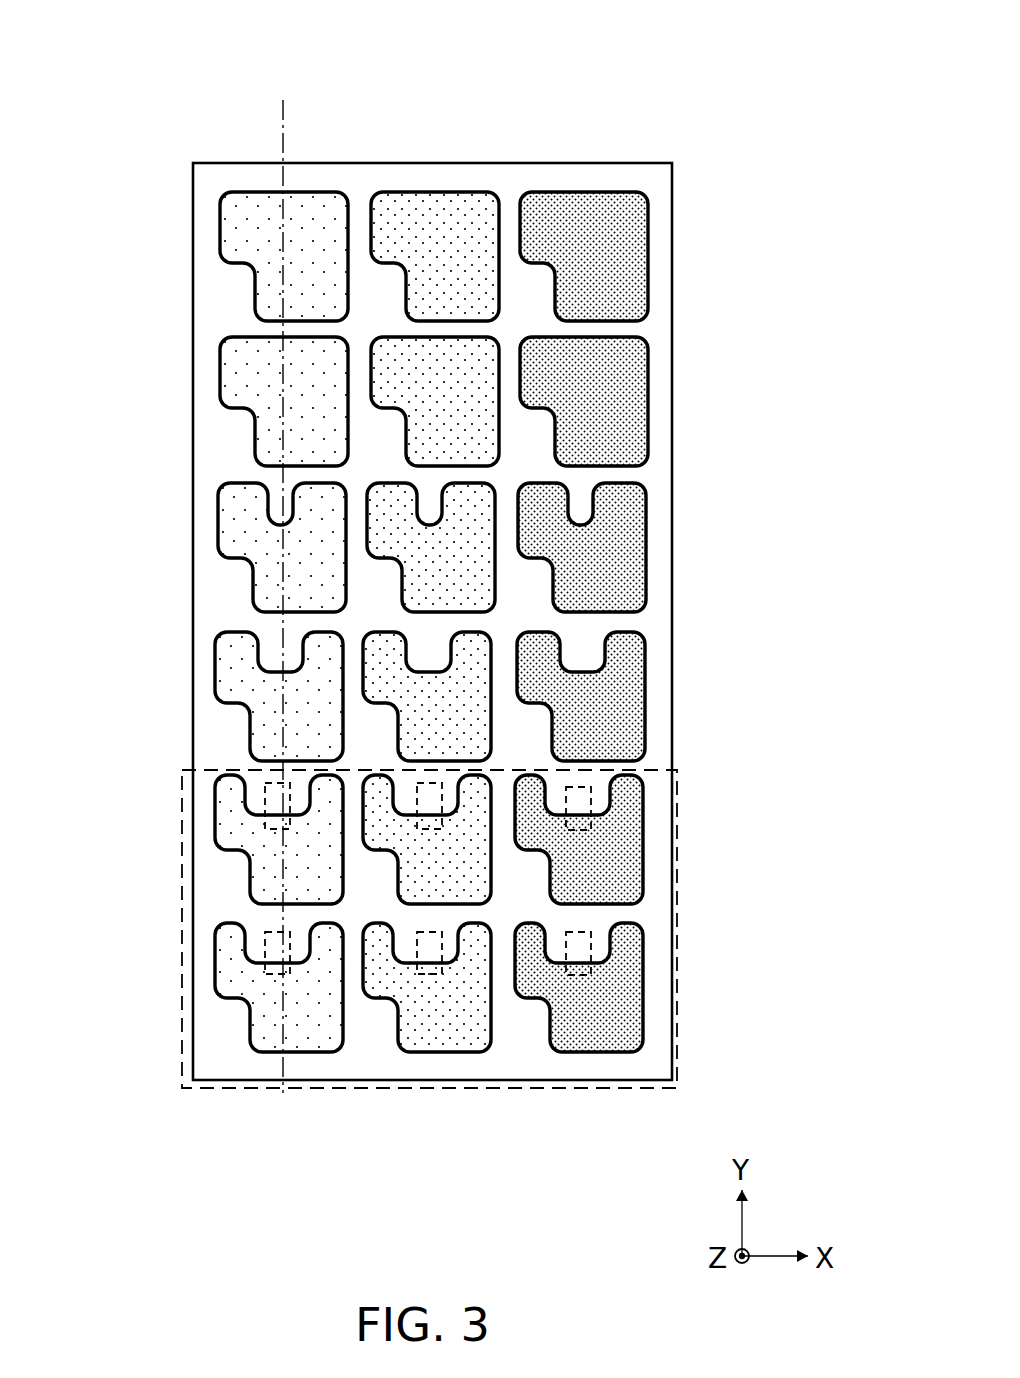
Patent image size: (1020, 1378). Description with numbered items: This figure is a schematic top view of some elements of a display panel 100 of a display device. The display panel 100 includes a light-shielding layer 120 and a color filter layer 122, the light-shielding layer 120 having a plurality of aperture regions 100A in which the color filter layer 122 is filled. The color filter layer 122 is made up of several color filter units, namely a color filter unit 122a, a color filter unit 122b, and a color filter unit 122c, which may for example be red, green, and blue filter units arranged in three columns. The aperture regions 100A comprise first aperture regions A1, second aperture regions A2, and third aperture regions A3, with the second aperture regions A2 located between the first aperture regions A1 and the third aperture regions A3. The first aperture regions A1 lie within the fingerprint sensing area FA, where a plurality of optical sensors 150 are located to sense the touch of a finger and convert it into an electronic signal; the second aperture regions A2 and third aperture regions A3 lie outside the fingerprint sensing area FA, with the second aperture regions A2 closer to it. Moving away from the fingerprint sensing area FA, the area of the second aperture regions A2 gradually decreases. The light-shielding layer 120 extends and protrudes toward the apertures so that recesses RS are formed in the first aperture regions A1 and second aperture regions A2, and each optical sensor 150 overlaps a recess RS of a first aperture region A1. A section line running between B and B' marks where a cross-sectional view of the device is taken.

The display panel 100 is at (200, 100).
The aperture regions 100A is at (572, 0).
The light-shielding layer 120 is at (672, 178).
The color filter layer 122 is at (742, 12).
The color filter unit 122a is at (258, 1083).
The color filter unit 122b is at (447, 1083).
The color filter unit 122c is at (600, 1083).
The optical sensors 150 is at (591, 805).
The fingerprint sensing area FA is at (677, 1040).
The first aperture regions A1 is at (215, 810).
The second aperture regions A2 is at (218, 520).
The third aperture regions A3 is at (220, 232).
The recess RS is at (276, 664).
The section line B is at (315, 595).
The section line B' is at (311, 1122).